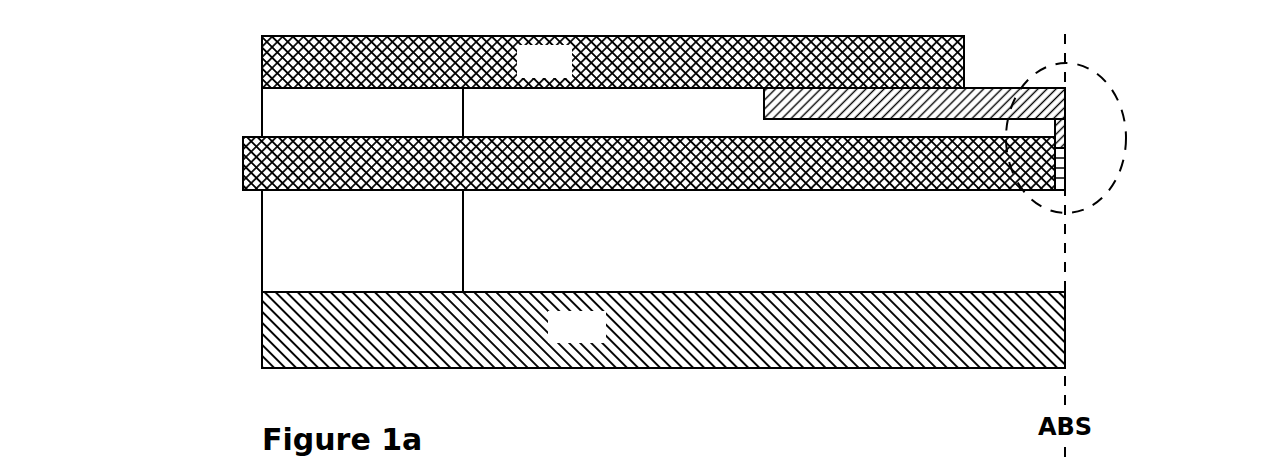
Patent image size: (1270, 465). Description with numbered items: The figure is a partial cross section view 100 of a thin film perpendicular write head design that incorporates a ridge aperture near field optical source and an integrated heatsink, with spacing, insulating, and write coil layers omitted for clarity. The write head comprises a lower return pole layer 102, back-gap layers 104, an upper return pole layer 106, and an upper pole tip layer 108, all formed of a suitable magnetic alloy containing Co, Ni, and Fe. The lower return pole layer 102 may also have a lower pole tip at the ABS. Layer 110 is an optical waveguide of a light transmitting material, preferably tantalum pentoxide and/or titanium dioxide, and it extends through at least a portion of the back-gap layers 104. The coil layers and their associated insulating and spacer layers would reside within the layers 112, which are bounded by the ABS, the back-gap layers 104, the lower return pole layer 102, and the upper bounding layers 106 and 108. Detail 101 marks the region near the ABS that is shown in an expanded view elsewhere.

The cross section view 100 is at (212, 90).
The detail 101 is at (1126, 137).
The lower return pole layer 102 is at (601, 340).
The back-gap layer 104 is at (378, 112).
The upper return pole layer 106 is at (568, 74).
The upper pole tip layer 108 is at (917, 100).
The optical waveguide 110 is at (647, 163).
The layers 112 is at (638, 129).